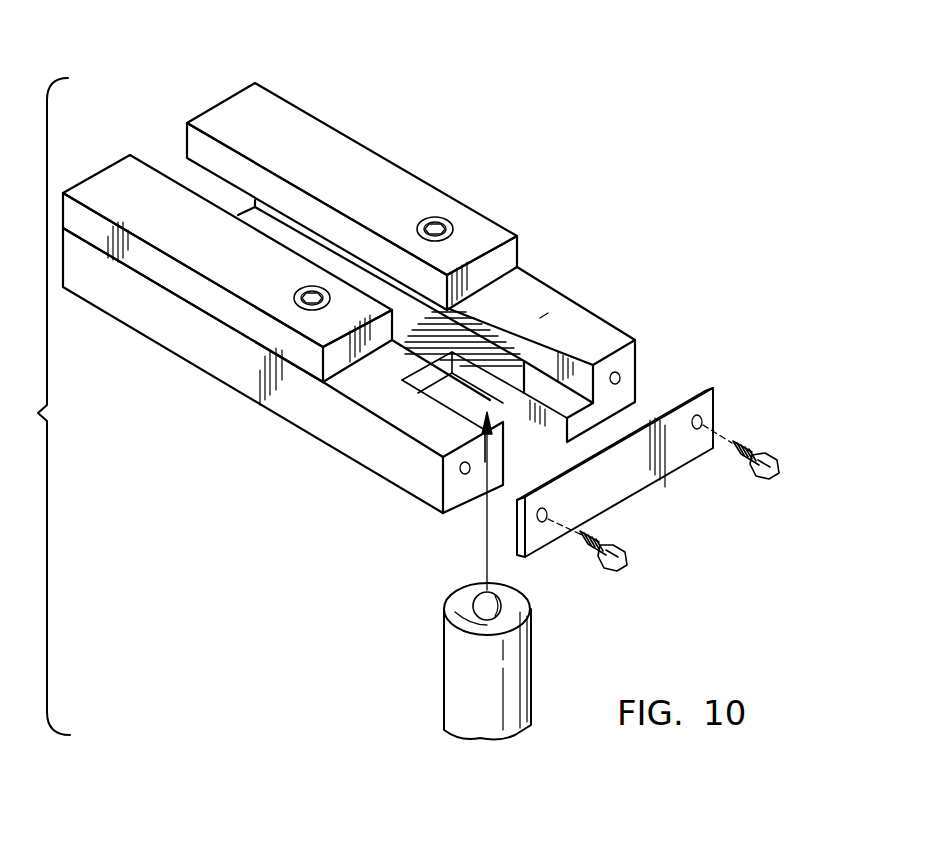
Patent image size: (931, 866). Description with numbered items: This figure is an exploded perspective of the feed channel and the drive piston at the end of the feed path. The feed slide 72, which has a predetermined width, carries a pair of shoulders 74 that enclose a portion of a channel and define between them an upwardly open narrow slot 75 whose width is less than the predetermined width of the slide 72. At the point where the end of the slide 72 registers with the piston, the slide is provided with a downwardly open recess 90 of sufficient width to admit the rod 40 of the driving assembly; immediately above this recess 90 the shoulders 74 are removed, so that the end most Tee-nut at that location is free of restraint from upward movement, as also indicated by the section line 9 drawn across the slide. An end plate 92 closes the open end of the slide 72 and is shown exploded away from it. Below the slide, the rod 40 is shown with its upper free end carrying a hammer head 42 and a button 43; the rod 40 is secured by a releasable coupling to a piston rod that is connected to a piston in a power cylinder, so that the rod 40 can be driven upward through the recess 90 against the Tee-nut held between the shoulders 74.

The shoulders 74 is at (258, 118).
The upwardly open narrow slot 75 is at (335, 270).
The feed slide 72 is at (523, 445).
The downwardly open recess 90 is at (543, 318).
The end plate 92 is at (625, 482).
The rod 40 is at (453, 677).
The hammer head 42 is at (457, 610).
The button 43 is at (483, 592).
The section line 9- 9 is at (620, 323).